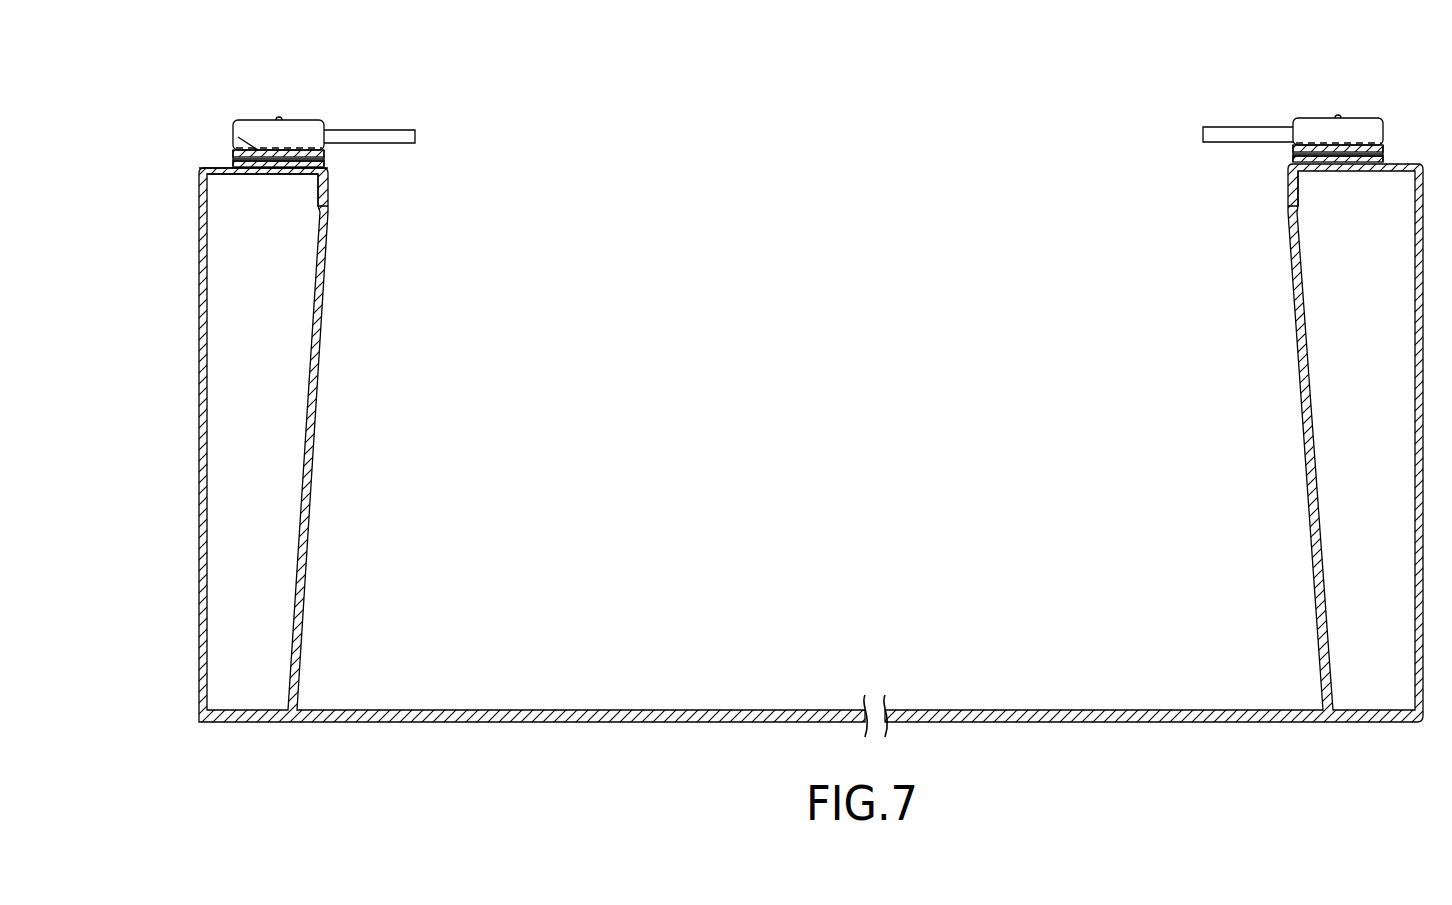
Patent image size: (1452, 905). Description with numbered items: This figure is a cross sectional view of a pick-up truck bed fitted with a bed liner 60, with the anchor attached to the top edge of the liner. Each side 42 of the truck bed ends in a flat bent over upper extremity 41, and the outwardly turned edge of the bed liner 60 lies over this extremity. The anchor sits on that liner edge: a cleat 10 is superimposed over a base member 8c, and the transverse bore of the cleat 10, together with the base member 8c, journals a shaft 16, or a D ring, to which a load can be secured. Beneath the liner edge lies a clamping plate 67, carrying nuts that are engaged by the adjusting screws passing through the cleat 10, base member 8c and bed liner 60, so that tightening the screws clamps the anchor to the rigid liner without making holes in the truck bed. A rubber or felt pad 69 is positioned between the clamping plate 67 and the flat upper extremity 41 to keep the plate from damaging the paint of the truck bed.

The base member 8c is at (231, 128).
The cleat 10 is at (313, 135).
The shaft 16 is at (405, 130).
The flat bent over upper extremity 41 is at (236, 166).
The side of the bed 42 is at (198, 200).
The bed liner 60 is at (327, 163).
The clamping plate 67 is at (327, 176).
The rubber or felt pad 69 is at (272, 165).